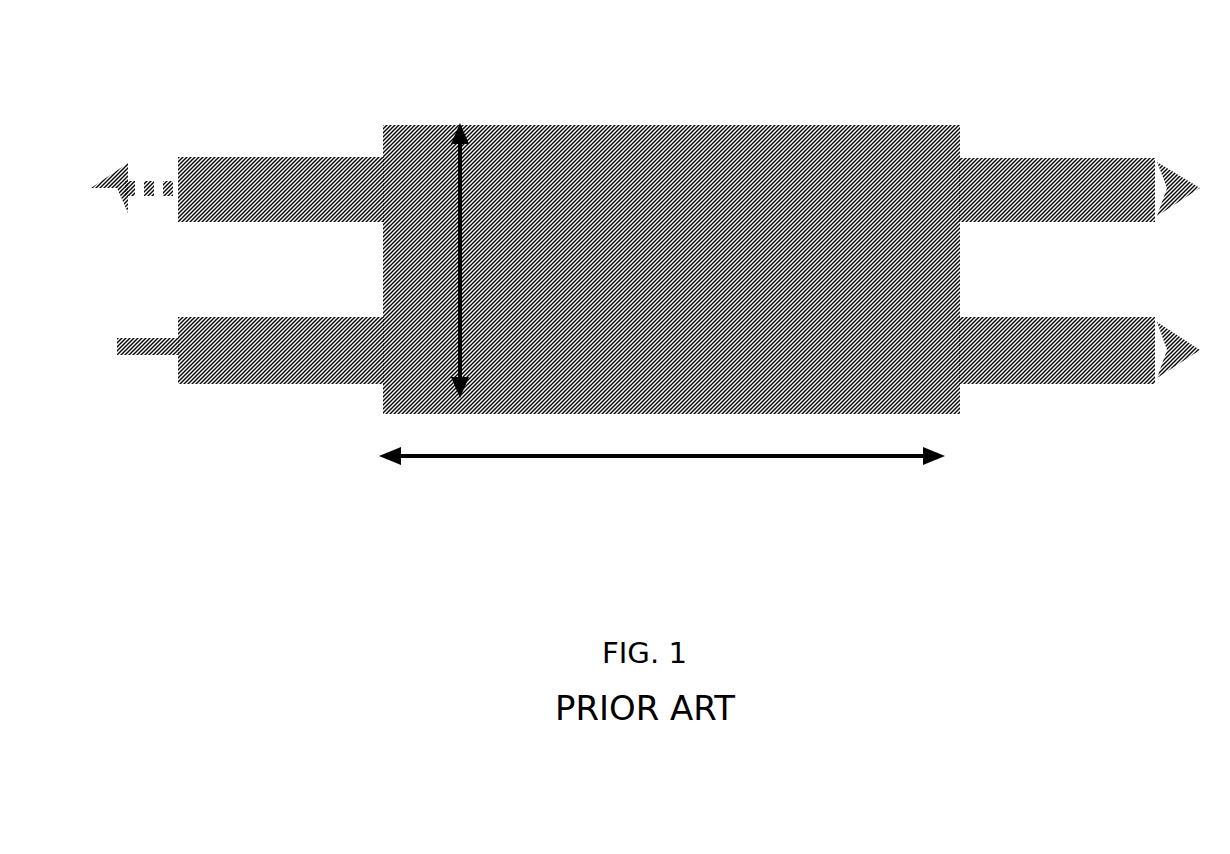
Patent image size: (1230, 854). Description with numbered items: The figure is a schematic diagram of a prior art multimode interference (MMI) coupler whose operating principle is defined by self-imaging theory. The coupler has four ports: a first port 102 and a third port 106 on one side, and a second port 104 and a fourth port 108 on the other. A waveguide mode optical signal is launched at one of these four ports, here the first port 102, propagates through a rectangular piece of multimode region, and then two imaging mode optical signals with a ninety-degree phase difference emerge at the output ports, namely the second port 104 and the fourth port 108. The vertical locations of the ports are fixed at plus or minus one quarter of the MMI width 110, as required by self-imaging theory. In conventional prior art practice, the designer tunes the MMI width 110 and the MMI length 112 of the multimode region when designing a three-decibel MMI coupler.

The port P1 102 is at (250, 404).
The port P2 104 is at (1079, 420).
The port P3 106 is at (237, 129).
The port P4 108 is at (1079, 130).
The width W_MMI 110 is at (554, 260).
The length L_MMI 112 is at (662, 482).